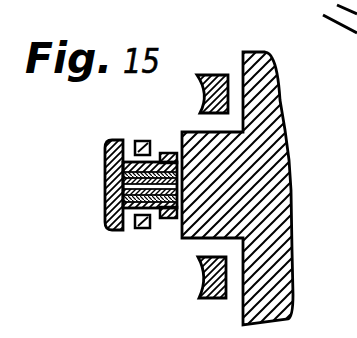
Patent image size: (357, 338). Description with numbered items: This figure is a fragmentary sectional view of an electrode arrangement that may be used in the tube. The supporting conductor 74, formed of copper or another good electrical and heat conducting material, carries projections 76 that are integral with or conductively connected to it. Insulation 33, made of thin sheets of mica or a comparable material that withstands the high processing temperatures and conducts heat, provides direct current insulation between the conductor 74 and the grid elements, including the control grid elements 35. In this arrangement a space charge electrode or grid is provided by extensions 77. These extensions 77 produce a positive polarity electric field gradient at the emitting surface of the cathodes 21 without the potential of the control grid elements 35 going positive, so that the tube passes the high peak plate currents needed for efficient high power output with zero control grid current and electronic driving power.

The supporting conductor 74 is at (288, 153).
The cathodes 21 is at (228, 60).
The insulation 33 is at (107, 179).
The projections 76 is at (107, 203).
The control grid elements 35 is at (159, 127).
The extensions 77 is at (162, 216).